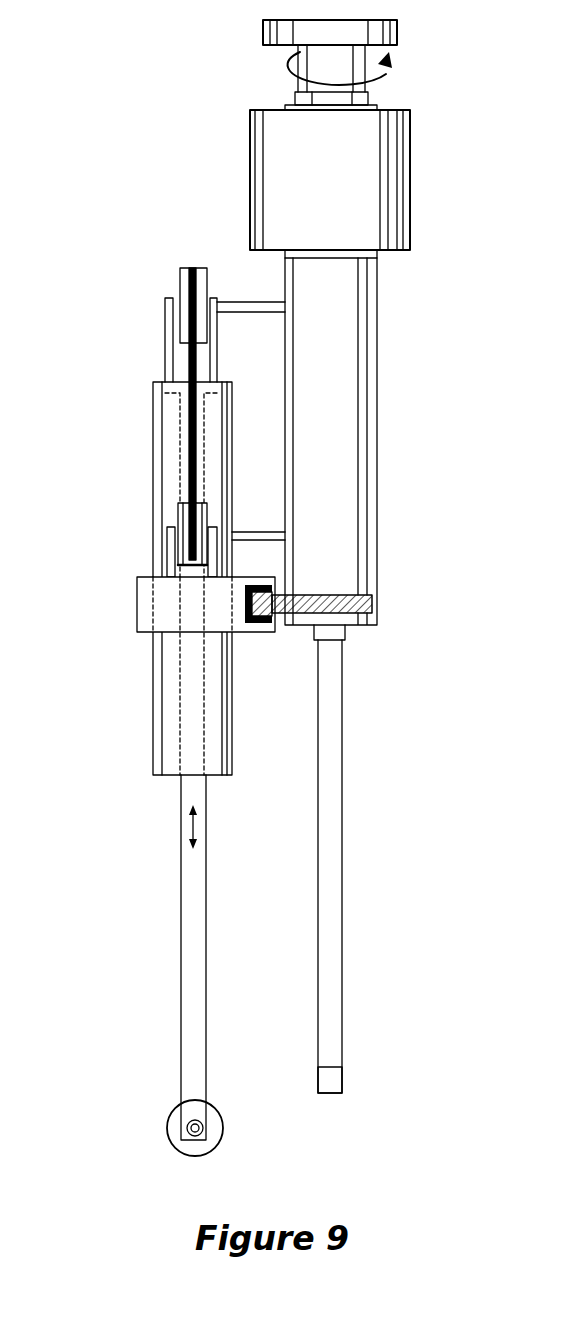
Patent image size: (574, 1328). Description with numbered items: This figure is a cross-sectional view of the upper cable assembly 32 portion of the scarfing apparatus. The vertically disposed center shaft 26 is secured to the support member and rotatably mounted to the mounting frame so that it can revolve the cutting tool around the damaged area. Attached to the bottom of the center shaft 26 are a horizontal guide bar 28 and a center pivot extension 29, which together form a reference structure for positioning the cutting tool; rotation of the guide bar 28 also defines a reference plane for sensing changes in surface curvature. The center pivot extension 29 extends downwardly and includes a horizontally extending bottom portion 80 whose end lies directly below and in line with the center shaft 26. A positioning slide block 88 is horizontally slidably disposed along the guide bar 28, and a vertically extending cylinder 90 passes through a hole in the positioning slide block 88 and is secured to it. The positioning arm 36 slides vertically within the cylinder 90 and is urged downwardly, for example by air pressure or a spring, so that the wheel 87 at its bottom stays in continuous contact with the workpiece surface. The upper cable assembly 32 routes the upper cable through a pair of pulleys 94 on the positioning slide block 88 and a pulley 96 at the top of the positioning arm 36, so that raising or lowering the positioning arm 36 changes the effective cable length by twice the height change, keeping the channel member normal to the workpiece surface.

The center shaft 26 is at (370, 293).
The horizontal guide bar 28 is at (373, 628).
The center pivot extension 29 is at (337, 887).
The upper cable assembly 32 is at (103, 309).
The positioning arm 36 is at (205, 913).
The horizontally extending bottom portion 80 is at (340, 1085).
The wheel 87 is at (218, 1118).
The positioning slide block 88 is at (143, 612).
The vertically extending cylinder 90 is at (160, 403).
The pair of pulleys 94 is at (187, 515).
The pulley 96 is at (185, 278).